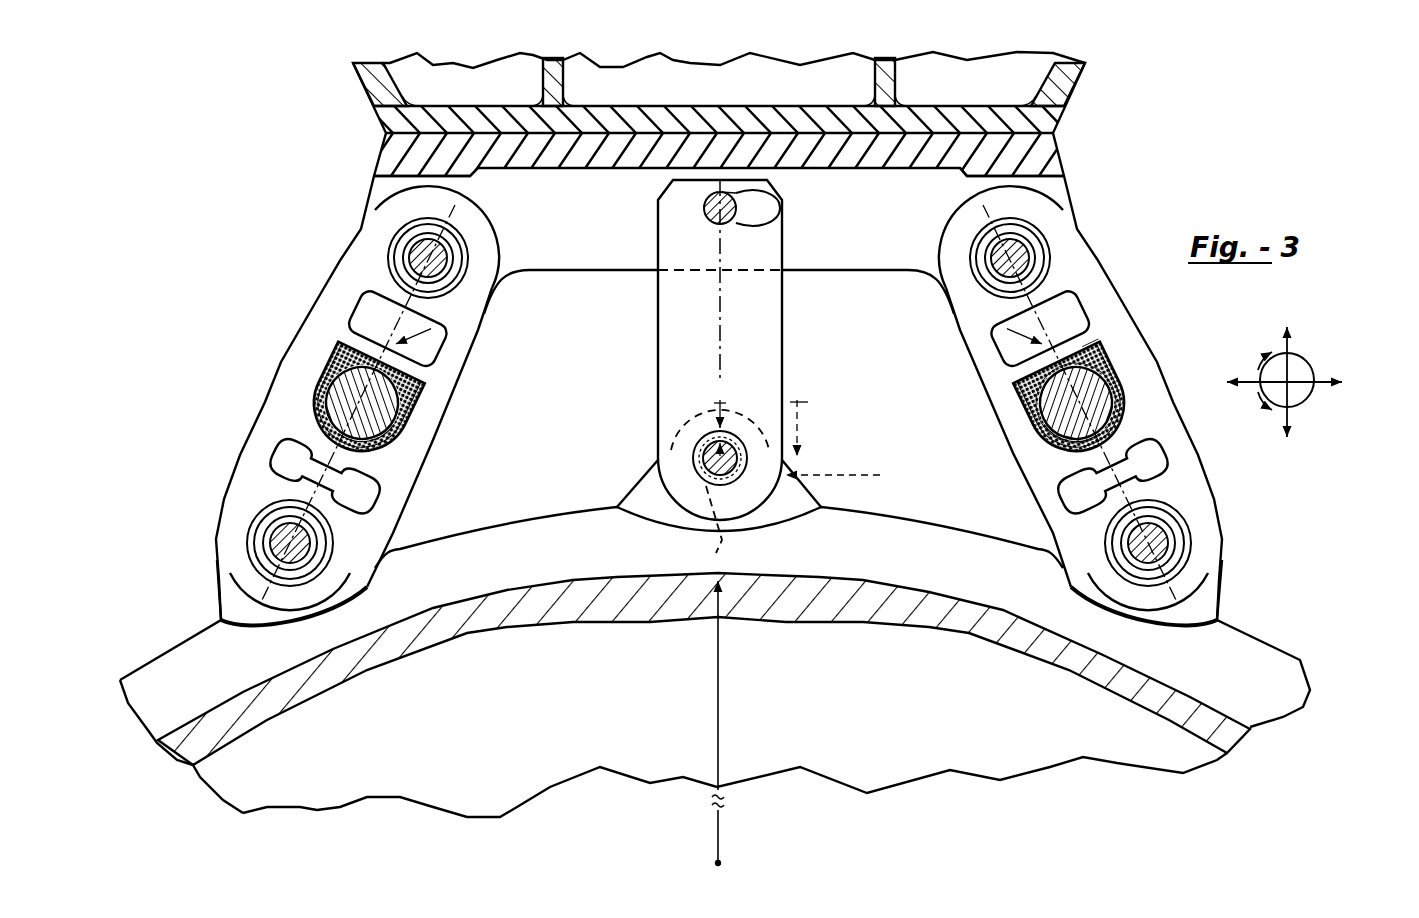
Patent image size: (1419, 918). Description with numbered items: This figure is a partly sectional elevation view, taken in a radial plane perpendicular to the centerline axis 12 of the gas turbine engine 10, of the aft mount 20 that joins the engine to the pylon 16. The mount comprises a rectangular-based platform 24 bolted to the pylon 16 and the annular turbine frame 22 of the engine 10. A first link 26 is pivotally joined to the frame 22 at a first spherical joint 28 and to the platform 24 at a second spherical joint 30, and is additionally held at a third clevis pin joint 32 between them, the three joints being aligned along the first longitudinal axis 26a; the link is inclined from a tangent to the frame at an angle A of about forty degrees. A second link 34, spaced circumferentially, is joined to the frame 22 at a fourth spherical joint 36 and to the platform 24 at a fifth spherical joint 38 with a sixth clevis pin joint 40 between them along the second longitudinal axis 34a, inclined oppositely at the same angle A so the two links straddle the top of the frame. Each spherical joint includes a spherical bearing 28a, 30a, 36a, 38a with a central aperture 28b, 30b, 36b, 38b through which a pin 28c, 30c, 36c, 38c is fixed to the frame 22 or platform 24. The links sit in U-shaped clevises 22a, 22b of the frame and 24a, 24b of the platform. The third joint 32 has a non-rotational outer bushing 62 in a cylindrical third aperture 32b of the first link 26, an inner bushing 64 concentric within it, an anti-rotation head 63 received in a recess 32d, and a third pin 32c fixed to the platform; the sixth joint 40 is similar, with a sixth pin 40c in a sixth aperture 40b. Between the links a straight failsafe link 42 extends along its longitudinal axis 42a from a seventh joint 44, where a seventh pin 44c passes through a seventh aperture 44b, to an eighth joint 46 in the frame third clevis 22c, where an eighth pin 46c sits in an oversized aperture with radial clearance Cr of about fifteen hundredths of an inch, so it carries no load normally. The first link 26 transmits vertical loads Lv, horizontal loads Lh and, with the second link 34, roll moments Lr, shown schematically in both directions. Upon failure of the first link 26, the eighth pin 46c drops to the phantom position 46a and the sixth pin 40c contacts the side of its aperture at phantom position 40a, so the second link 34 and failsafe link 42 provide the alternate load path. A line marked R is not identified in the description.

The gas turbine engine 10 is at (1243, 752).
The centerline axis 12 is at (723, 863).
The pylon 16 is at (1085, 90).
The aft mount 20 is at (1162, 150).
The turbine frame 22 is at (1280, 650).
The frame first clevis 22a is at (1227, 597).
The frame second clevis 22b is at (226, 597).
The frame third clevis 22c is at (647, 478).
The platform 24 is at (1063, 150).
The platform first clevis 24a is at (1075, 202).
The platform second clevis 24b is at (372, 200).
The first link 26 is at (1143, 345).
The first longitudinal axis 26a is at (1053, 496).
The first spherical joint 28 is at (1206, 559).
The spherical bearing 28a is at (1203, 537).
The central aperture 28b is at (1186, 515).
The first pin 28c is at (1093, 587).
The second spherical joint 30 is at (1063, 247).
The spherical bearing 30a is at (1050, 260).
The central aperture 30b is at (1055, 286).
The second pin 30c is at (977, 253).
The third clevis pin joint 32 is at (1017, 404).
The third aperture 32b is at (1037, 420).
The third pin 32c is at (1047, 448).
The recess 32d is at (1000, 372).
The second link 34 is at (283, 357).
The second longitudinal axis 34a is at (387, 500).
The fourth spherical joint 36 is at (237, 557).
The spherical bearing 36a is at (243, 540).
The central aperture 36b is at (262, 522).
The fourth pin 36c is at (357, 585).
The fifth spherical joint 38 is at (383, 229).
The spherical bearing 38a is at (392, 256).
The central aperture 38b is at (395, 272).
The fifth pin 38c is at (456, 262).
The sixth clevis pin joint 40 is at (300, 402).
The phantom-line pin position 40a is at (445, 398).
The sixth aperture 40b is at (430, 381).
The sixth pin 40c is at (412, 428).
The failsafe link 42 is at (657, 328).
The failsafe link longitudinal axis 42a is at (722, 312).
The seventh joint 44 is at (690, 212).
The seventh aperture 44b is at (738, 213).
The seventh pin 44c is at (738, 197).
The eighth joint 46 is at (683, 453).
The phantom-line pin position 46a is at (716, 538).
The eighth pin 46c is at (702, 470).
The outer bushing 62 is at (1113, 425).
The anti-rotation head 63 is at (1103, 345).
The inner bushing 64 is at (1108, 370).
The radius of curvature R is at (720, 717).
The inclination angle A is at (454, 342).
The radial clearance Cr is at (720, 405).
The vertical load Lv is at (1310, 323).
The horizontal load Lh is at (1333, 397).
The roll load Lr is at (1315, 368).